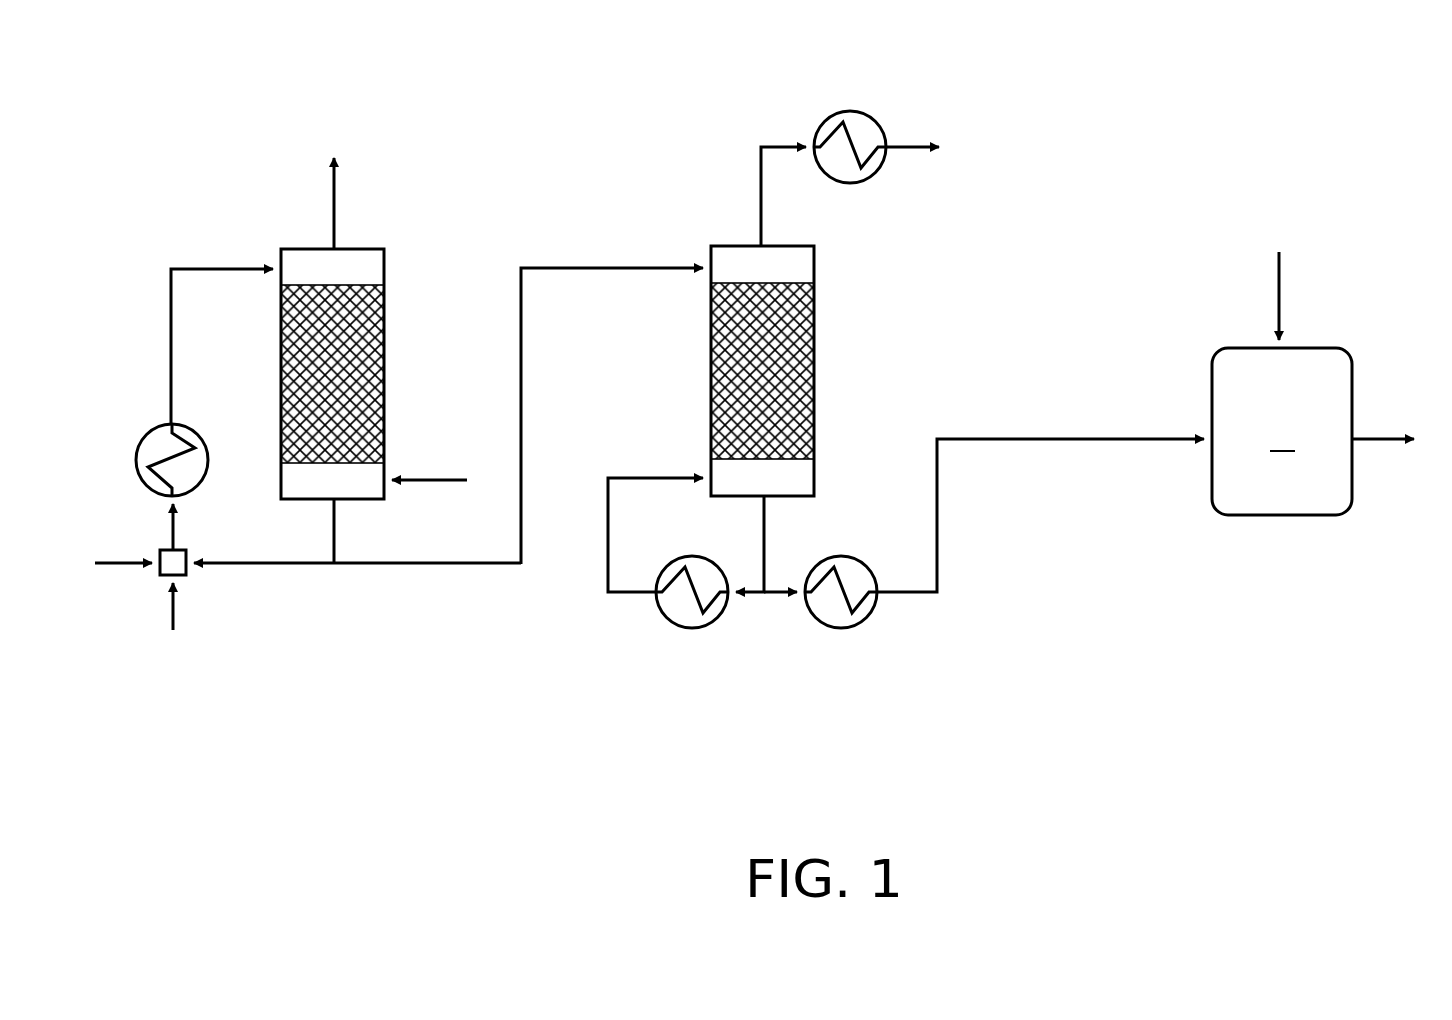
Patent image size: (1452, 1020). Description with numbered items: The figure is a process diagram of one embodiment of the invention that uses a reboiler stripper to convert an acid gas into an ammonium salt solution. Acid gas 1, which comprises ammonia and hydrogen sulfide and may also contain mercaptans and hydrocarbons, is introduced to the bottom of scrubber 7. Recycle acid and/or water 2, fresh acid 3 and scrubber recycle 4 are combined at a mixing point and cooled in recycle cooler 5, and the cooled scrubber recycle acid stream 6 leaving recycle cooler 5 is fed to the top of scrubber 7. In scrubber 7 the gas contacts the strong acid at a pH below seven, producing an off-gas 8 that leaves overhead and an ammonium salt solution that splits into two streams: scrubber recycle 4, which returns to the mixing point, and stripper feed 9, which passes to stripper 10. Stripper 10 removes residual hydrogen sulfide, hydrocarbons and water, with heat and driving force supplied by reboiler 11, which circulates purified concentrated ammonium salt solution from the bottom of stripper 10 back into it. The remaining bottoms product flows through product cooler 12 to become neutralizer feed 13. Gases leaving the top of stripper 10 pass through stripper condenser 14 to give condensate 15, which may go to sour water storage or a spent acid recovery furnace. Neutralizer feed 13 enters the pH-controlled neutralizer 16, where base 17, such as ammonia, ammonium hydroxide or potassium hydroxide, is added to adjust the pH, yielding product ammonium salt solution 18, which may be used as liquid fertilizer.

The acid gas 1 is at (444, 480).
The recycle acid and/or water 2 is at (176, 607).
The fresh acid 3 is at (112, 562).
The scrubber recycle 4 is at (232, 565).
The recycle cooler 5 is at (143, 440).
The cooled scrubber recycle acid stream 6 is at (170, 309).
The scrubber 7 is at (378, 247).
The off-gas 8 is at (333, 197).
The stripper feed 9 is at (522, 395).
The stripper 10 is at (792, 246).
The reboiler 11 is at (692, 628).
The product cooler 12 is at (840, 628).
The neutralizer feed 13 is at (937, 490).
The stripper condenser 14 is at (824, 118).
The condensate 15 is at (906, 150).
The neutralizer 16 is at (1282, 431).
The base 17 is at (1282, 312).
The product ammonium salt solution 18 is at (1378, 434).